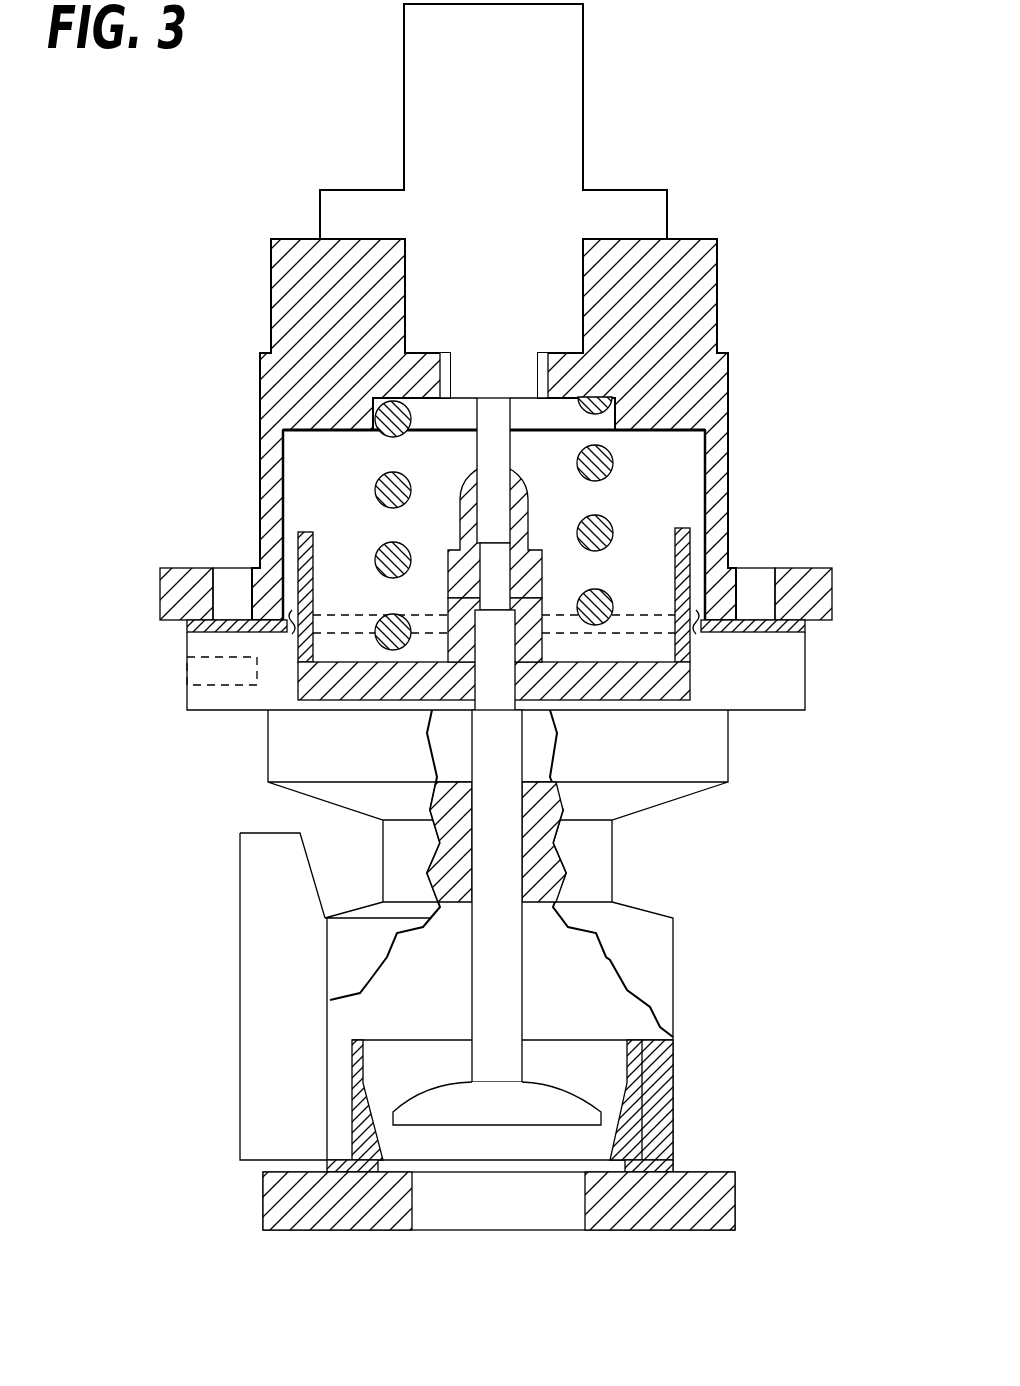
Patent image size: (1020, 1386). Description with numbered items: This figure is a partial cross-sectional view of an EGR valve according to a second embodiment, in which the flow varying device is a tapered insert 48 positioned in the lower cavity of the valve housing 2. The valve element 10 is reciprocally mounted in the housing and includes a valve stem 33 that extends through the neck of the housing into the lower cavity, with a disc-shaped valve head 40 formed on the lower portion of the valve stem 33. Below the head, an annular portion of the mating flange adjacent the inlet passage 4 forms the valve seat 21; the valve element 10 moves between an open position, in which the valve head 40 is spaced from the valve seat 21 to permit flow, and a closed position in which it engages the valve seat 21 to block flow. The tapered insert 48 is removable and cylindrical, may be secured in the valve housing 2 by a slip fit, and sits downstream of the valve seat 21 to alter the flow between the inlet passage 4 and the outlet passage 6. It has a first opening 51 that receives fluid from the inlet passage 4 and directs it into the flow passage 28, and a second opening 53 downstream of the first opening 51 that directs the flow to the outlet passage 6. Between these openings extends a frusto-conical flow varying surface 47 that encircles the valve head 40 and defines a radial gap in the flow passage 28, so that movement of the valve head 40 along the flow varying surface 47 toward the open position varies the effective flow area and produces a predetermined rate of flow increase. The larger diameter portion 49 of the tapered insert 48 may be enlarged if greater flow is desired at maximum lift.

The valve housing 2 is at (805, 739).
The inlet passage 4 is at (478, 1158).
The outlet passage 6 is at (238, 960).
The valve element 10 is at (536, 835).
The valve seat 21 is at (578, 1170).
The flow passage 28 is at (496, 1157).
The valve stem 33 is at (523, 853).
The valve head 40 is at (568, 1087).
The flow varying surface 47 is at (376, 1121).
The tapered insert 48 is at (633, 1130).
The larger diameter portion 49 is at (376, 1074).
The first opening 51 is at (450, 1158).
The second opening 53 is at (406, 1054).